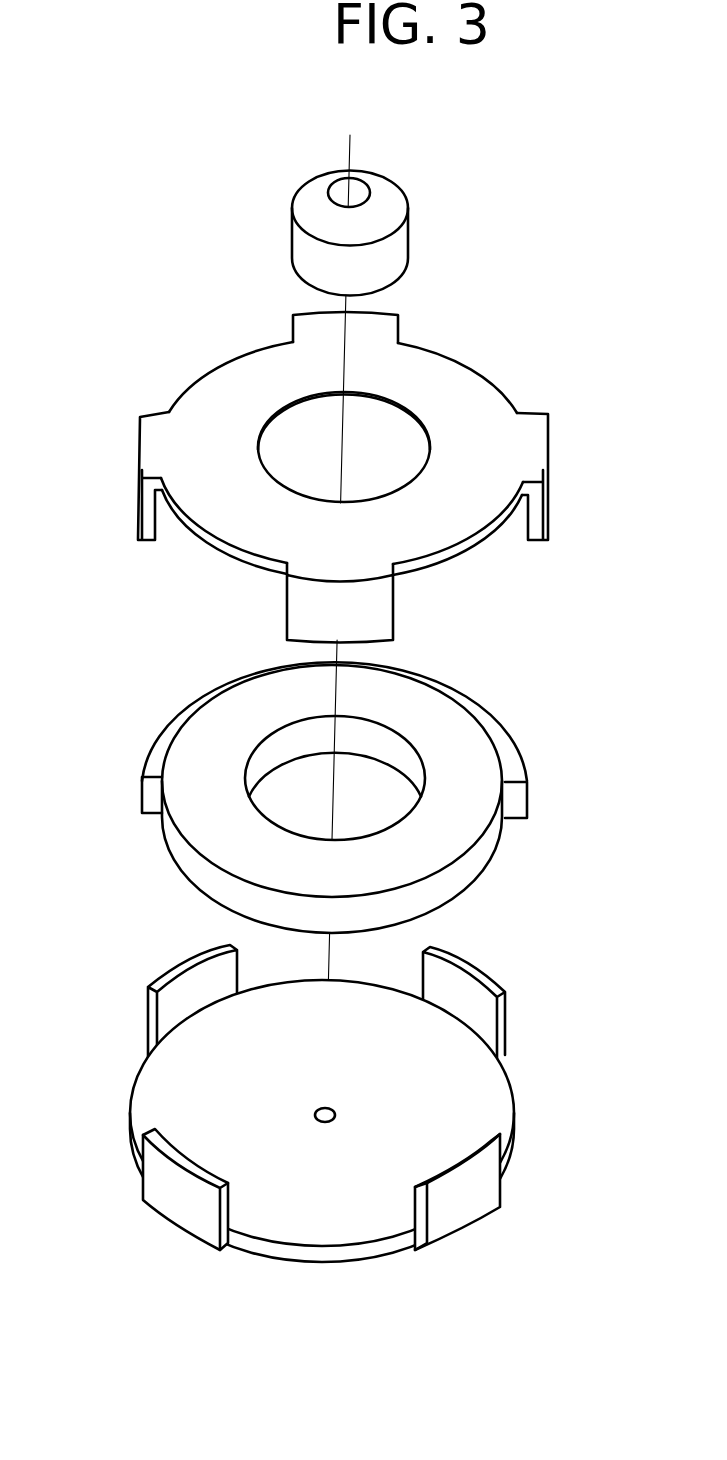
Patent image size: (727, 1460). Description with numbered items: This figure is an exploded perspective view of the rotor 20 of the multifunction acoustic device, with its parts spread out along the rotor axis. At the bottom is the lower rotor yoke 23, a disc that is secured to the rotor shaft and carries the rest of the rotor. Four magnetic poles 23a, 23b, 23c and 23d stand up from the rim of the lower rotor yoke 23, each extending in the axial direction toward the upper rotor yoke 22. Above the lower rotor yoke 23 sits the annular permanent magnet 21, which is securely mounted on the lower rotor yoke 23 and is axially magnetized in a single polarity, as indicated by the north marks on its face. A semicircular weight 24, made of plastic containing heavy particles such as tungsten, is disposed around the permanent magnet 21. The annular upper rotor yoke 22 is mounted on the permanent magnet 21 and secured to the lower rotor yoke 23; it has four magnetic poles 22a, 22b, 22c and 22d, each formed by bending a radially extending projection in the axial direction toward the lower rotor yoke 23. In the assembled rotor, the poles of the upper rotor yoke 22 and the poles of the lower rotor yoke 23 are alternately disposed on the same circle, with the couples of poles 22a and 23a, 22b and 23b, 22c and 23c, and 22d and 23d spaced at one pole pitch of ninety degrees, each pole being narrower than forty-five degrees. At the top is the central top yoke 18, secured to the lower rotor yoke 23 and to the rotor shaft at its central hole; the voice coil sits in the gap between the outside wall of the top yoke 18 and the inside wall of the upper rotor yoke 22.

The central top yoke 18 is at (381, 168).
The rotor 20 is at (447, 315).
The annular permanent magnet 21 is at (371, 697).
The upper rotor yoke 22 is at (453, 356).
The magnetic pole 22a is at (533, 520).
The magnetic pole 22b is at (360, 618).
The magnetic pole 22c is at (150, 518).
The magnetic pole 22d is at (313, 318).
The lower rotor yoke 23 is at (310, 1117).
The magnetic pole 23a is at (445, 1228).
The magnetic pole 23b is at (185, 1207).
The magnetic pole 23c is at (167, 984).
The magnetic pole 23d is at (447, 946).
The semicircular weight 24 is at (503, 740).